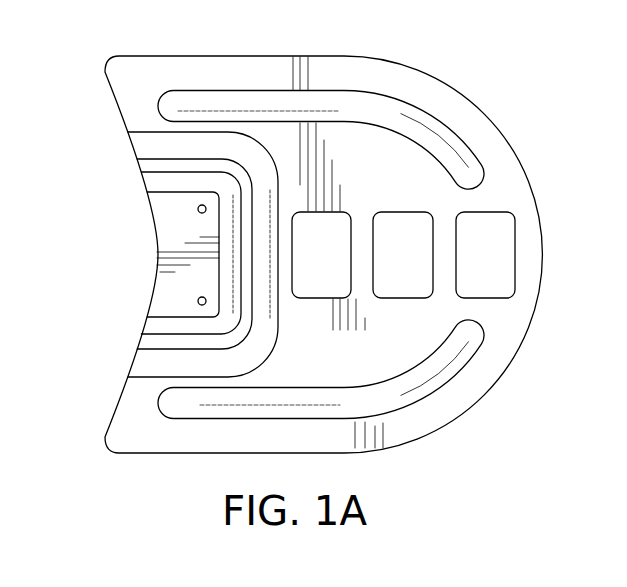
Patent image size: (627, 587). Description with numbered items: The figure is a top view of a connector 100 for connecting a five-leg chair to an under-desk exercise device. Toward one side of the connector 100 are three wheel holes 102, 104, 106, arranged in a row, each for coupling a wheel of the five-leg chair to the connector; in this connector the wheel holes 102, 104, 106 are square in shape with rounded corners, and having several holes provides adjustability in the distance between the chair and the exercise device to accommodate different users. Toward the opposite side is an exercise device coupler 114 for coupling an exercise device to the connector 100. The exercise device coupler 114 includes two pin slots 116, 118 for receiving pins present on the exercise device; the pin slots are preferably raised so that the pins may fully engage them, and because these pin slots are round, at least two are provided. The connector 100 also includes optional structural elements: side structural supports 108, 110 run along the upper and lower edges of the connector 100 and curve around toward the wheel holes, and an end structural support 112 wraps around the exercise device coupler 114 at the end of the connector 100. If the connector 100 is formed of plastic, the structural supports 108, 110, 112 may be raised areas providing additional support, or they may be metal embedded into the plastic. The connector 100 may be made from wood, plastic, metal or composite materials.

The connector 100 is at (514, 106).
The wheel hole 102 is at (502, 253).
The wheel hole 104 is at (420, 277).
The wheel hole 106 is at (333, 230).
The side structural support 108 is at (383, 104).
The side structural support 110 is at (425, 388).
The end structural support 112 is at (148, 362).
The exercise device coupler 114 is at (157, 297).
The pin slot 116 is at (198, 302).
The pin slot 118 is at (198, 209).